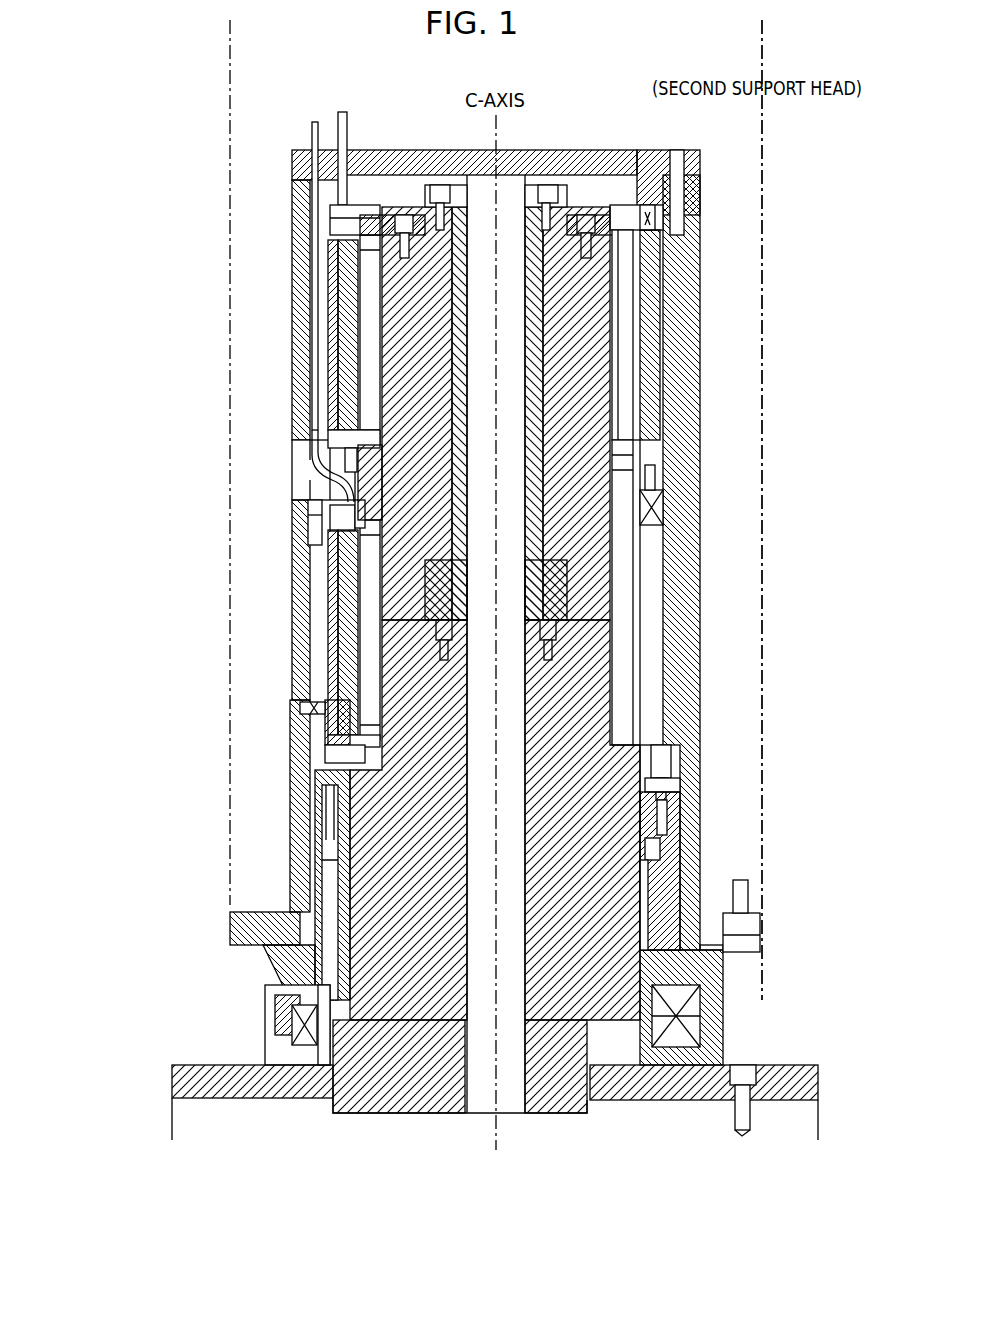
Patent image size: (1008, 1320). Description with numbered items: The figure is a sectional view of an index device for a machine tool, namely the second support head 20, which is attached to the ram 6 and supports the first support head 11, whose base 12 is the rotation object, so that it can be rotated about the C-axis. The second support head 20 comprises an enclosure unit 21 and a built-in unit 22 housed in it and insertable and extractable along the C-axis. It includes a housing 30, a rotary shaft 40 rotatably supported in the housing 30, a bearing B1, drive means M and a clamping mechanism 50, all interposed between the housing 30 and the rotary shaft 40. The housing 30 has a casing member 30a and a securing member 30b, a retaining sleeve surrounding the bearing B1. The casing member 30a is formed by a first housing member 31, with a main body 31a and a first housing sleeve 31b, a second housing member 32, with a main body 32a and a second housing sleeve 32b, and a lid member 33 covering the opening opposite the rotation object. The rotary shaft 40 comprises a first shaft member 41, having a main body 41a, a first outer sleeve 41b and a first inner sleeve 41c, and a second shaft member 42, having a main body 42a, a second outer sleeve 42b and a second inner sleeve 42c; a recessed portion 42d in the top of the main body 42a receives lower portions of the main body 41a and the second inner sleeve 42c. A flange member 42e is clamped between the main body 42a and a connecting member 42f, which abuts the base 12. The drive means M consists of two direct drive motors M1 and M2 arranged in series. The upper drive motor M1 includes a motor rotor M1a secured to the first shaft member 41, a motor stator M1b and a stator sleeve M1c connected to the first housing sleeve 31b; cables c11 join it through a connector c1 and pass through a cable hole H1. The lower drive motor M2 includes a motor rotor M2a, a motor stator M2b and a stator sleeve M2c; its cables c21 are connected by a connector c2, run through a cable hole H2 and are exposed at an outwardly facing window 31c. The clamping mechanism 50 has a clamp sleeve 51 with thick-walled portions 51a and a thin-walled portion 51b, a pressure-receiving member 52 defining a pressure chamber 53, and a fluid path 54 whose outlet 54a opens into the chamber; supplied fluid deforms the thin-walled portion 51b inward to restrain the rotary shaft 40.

The ram 6 is at (762, 428).
The first support head 11 is at (210, 968).
The base 12 is at (203, 1090).
The second support head 20 is at (690, 157).
The enclosure unit 21 is at (285, 785).
The built-in unit 22 is at (355, 757).
The housing 30 is at (293, 290).
The casing member 30a is at (292, 870).
The securing member 30b is at (225, 959).
The first housing member 31 is at (220, 172).
The main body 31a is at (298, 267).
The first housing sleeve 31b is at (305, 205).
The outwardly facing window 31c is at (307, 480).
The second housing member 32 is at (240, 572).
The main body 32a is at (290, 600).
The second housing sleeve 32b is at (305, 513).
The lid member 33 is at (570, 152).
The rotary shaft 40 is at (615, 440).
The first shaft member 41 is at (778, 250).
The main body 41a is at (600, 275).
The first outer sleeve 41b is at (567, 212).
The first inner sleeve 41c is at (600, 205).
The second shaft member 42 is at (540, 785).
The main body 42a is at (540, 735).
The second outer sleeve 42b is at (445, 545).
The second inner sleeve 42c is at (455, 490).
The recessed portion 42d is at (450, 655).
The flange member 42e is at (773, 1080).
The connecting member 42f is at (590, 1112).
The clamping mechanism 50 is at (797, 742).
The clamp sleeve 51 is at (668, 810).
The thick-walled portions 51a is at (667, 785).
The thin-walled portion 51b is at (641, 890).
The pressure-receiving member 52 is at (665, 822).
The pressure chamber 53 is at (645, 850).
The fluid path 54 is at (652, 500).
The outlet 54a is at (658, 838).
The bearing B1 is at (300, 1010).
The cable hole H1 is at (350, 213).
The cable hole H2 is at (315, 428).
The drive means M is at (221, 491).
The drive motor M1 is at (165, 275).
The motor rotor M1a is at (368, 312).
The motor stator M1b is at (350, 340).
The stator sleeve M1c is at (332, 370).
The drive motor M2 is at (165, 680).
The motor rotor M2a is at (372, 632).
The motor stator M2b is at (350, 663).
The stator sleeve M2c is at (333, 690).
The connector c1 is at (348, 212).
The cables c11 is at (343, 132).
The connector c2 is at (322, 508).
The cables c21 is at (313, 455).